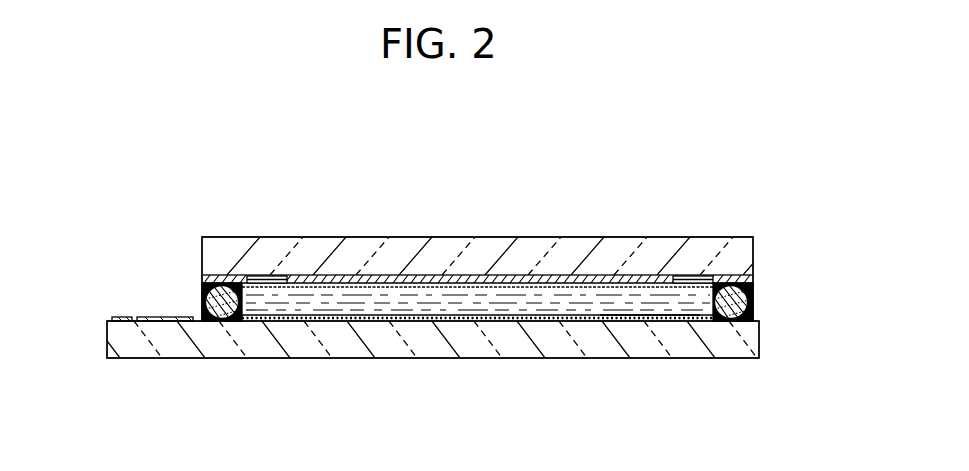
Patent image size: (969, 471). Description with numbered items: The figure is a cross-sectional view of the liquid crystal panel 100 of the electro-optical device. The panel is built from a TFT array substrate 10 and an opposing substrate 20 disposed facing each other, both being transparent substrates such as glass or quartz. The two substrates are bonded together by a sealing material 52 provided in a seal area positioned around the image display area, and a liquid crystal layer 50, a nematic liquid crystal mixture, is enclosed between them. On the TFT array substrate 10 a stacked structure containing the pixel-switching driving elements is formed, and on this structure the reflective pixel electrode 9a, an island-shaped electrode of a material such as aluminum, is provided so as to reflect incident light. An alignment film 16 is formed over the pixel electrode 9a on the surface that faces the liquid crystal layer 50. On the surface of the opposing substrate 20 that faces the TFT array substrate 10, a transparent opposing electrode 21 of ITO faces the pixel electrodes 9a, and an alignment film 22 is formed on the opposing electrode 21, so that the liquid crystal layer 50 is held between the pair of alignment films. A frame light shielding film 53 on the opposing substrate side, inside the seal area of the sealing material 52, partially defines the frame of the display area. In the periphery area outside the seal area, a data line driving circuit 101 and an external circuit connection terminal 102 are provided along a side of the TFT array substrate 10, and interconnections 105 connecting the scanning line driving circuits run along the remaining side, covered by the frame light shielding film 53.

The liquid crystal panel 100 is at (729, 112).
The TFT array substrate 10 is at (533, 349).
The opposing substrate 20 is at (457, 243).
The opposing electrode 21 is at (632, 276).
The alignment film 22 is at (566, 284).
The frame light shielding film 53 is at (266, 276).
The sealing material 52 is at (203, 301).
The liquid crystal layer 50 is at (476, 303).
The reflective pixel electrode 9a is at (307, 318).
The alignment film 16 is at (636, 316).
The interconnections 105 is at (693, 322).
The data line driving circuit 101 is at (158, 317).
The external circuit connection terminal 102 is at (123, 317).